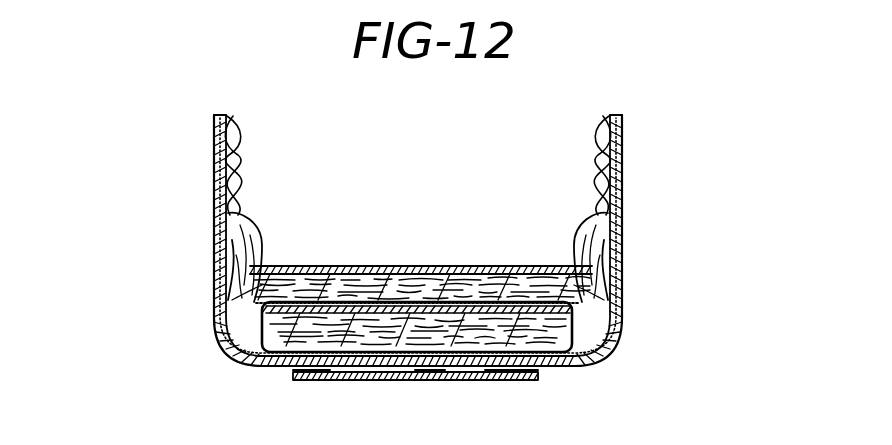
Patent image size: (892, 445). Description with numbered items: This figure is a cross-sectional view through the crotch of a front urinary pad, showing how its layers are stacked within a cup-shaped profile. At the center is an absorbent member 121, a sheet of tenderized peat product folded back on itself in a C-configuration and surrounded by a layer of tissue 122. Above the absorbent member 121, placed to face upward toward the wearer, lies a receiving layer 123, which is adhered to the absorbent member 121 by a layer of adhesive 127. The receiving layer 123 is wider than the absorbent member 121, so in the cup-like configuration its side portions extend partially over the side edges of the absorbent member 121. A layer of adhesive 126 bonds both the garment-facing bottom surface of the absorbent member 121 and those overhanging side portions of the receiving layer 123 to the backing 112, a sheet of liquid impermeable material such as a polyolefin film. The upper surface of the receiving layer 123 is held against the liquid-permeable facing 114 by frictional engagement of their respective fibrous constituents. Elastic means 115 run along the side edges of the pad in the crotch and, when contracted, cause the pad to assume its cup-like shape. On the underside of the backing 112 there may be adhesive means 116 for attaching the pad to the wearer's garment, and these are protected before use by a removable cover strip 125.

The backing 112 is at (220, 340).
The liquid-permeable facing 114 is at (337, 266).
The elastic means 115 is at (216, 180).
The adhesive means 116 is at (310, 377).
The absorbent member 121 is at (612, 352).
The layer of tissue 122 is at (222, 325).
The receiving layer 123 is at (514, 284).
The removable cover strip 125 is at (407, 378).
The layer of adhesive 126 is at (600, 270).
The layer of adhesive 127 is at (431, 302).